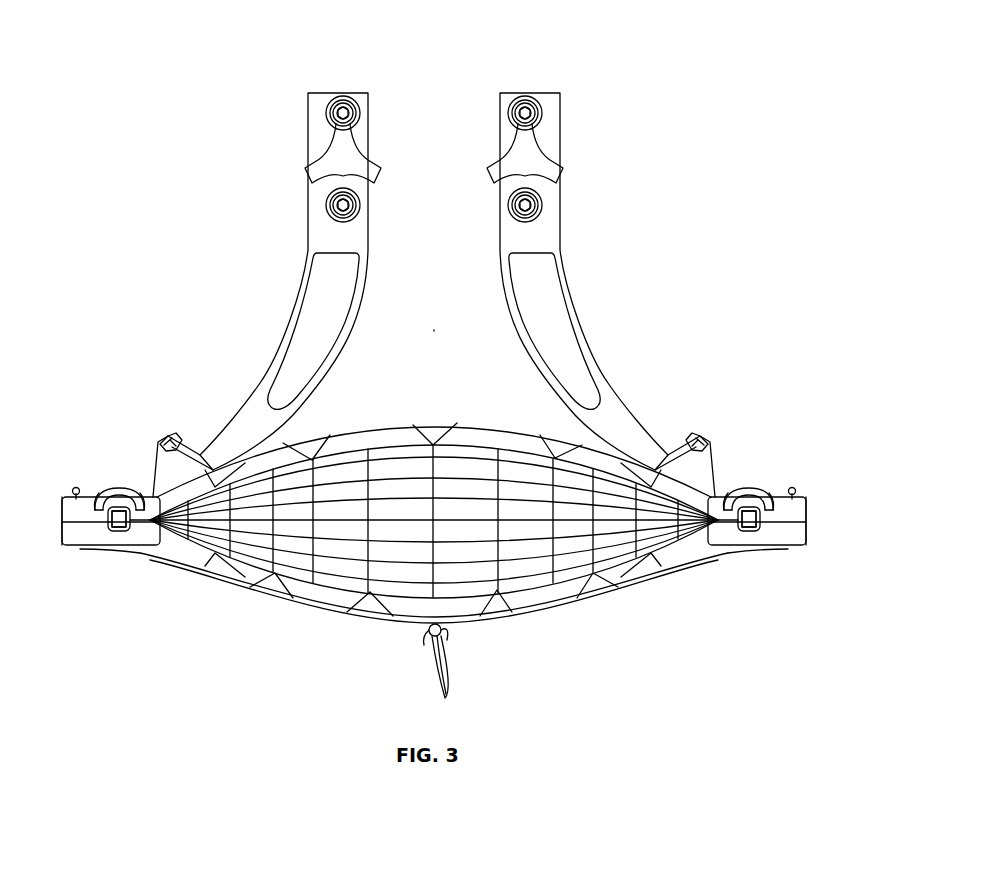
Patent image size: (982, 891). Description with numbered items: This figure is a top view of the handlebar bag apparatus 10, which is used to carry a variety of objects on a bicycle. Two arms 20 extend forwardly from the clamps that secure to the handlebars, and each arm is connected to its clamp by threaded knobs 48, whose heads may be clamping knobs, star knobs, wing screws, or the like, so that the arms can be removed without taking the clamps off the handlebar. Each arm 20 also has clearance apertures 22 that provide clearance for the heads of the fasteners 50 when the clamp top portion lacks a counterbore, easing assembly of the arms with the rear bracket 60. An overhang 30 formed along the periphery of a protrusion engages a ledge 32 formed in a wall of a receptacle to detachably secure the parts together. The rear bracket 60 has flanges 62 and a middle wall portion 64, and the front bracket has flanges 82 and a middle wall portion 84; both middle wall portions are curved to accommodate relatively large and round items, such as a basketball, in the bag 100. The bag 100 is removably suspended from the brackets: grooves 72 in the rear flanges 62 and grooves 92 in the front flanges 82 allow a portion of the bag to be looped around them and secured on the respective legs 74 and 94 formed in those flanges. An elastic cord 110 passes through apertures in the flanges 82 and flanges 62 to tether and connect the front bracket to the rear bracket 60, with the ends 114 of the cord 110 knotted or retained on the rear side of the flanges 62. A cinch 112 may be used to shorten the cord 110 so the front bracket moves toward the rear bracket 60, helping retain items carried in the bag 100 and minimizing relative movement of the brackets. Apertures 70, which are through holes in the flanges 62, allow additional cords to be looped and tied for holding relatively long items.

The handlebar bag apparatus 10 is at (697, 47).
The arm 20 is at (352, 318).
The clearance aperture 22 is at (362, 104).
The overhang 30 is at (175, 440).
The ledge 32 is at (166, 436).
The threaded knob 48 is at (352, 157).
The fastener 50 is at (343, 113).
The rear bracket 60 is at (434, 535).
The flange 62 is at (64, 502).
The middle wall portion 64 is at (347, 435).
The aperture 70 is at (82, 496).
The groove 72 is at (116, 497).
The leg 74 is at (140, 545).
The flange 82 is at (66, 542).
The middle wall portion 84 is at (318, 597).
The groove 92 is at (118, 531).
The leg 94 is at (122, 527).
The bag 100 is at (390, 470).
The cord 110 is at (540, 620).
The cinch 112 is at (445, 636).
The end of cord 114 is at (76, 488).